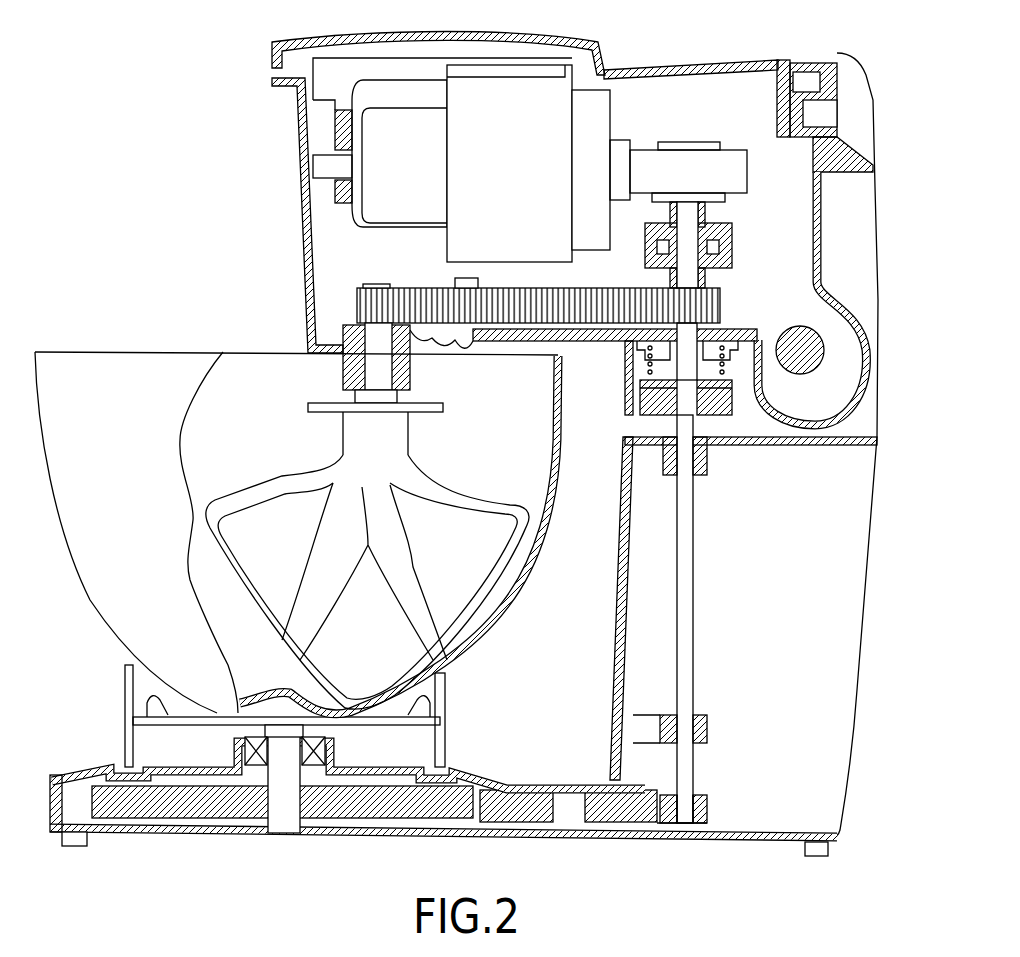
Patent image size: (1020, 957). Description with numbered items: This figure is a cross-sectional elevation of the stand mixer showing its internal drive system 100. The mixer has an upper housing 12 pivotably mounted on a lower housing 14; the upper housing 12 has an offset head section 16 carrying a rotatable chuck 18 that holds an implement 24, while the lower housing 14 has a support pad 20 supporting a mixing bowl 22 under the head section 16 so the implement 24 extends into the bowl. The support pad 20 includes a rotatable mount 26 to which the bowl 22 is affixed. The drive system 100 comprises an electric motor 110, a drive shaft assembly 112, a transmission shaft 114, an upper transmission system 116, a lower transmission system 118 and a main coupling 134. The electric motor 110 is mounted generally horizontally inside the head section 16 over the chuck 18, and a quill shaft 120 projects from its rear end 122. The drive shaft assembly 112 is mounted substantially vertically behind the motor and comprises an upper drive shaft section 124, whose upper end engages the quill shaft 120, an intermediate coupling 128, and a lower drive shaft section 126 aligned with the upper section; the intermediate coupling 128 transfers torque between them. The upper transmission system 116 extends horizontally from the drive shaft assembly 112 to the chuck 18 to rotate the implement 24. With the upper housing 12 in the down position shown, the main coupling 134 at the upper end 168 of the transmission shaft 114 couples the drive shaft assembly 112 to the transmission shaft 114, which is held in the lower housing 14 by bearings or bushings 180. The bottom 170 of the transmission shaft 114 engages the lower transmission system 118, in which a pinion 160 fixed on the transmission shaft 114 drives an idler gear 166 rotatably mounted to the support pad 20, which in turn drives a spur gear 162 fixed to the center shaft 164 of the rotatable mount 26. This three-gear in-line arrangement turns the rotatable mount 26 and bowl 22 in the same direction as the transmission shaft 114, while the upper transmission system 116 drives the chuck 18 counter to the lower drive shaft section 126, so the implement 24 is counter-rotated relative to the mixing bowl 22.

The upper housing 12 is at (753, 60).
The lower housing 14 is at (857, 712).
The head section 16 is at (442, 32).
The chuck 18 is at (412, 378).
The support pad 20 is at (100, 768).
The mixing bowl 22 is at (60, 558).
The implement 24 is at (283, 478).
The rotatable mount 26 is at (330, 745).
The drive system 100 is at (610, 76).
The electric motor 110 is at (526, 170).
The drive shaft assembly 112 is at (690, 278).
The transmission shaft 114 is at (688, 546).
The upper transmission system 116 is at (597, 303).
The lower transmission system 118 is at (541, 790).
The quill shaft 120 is at (733, 156).
The rear end 122 is at (612, 118).
The upper drive shaft section 124 is at (690, 213).
The lower drive shaft section 126 is at (688, 338).
The intermediate coupling 128 is at (720, 252).
The main coupling 134 is at (623, 398).
The pinion 160 is at (705, 806).
The spur gear 162 is at (350, 822).
The center shaft 164 is at (277, 812).
The idler gear 166 is at (623, 828).
The upper end 168 is at (666, 442).
The bottom 170 is at (680, 798).
The bearings or bushings 180 is at (707, 472).